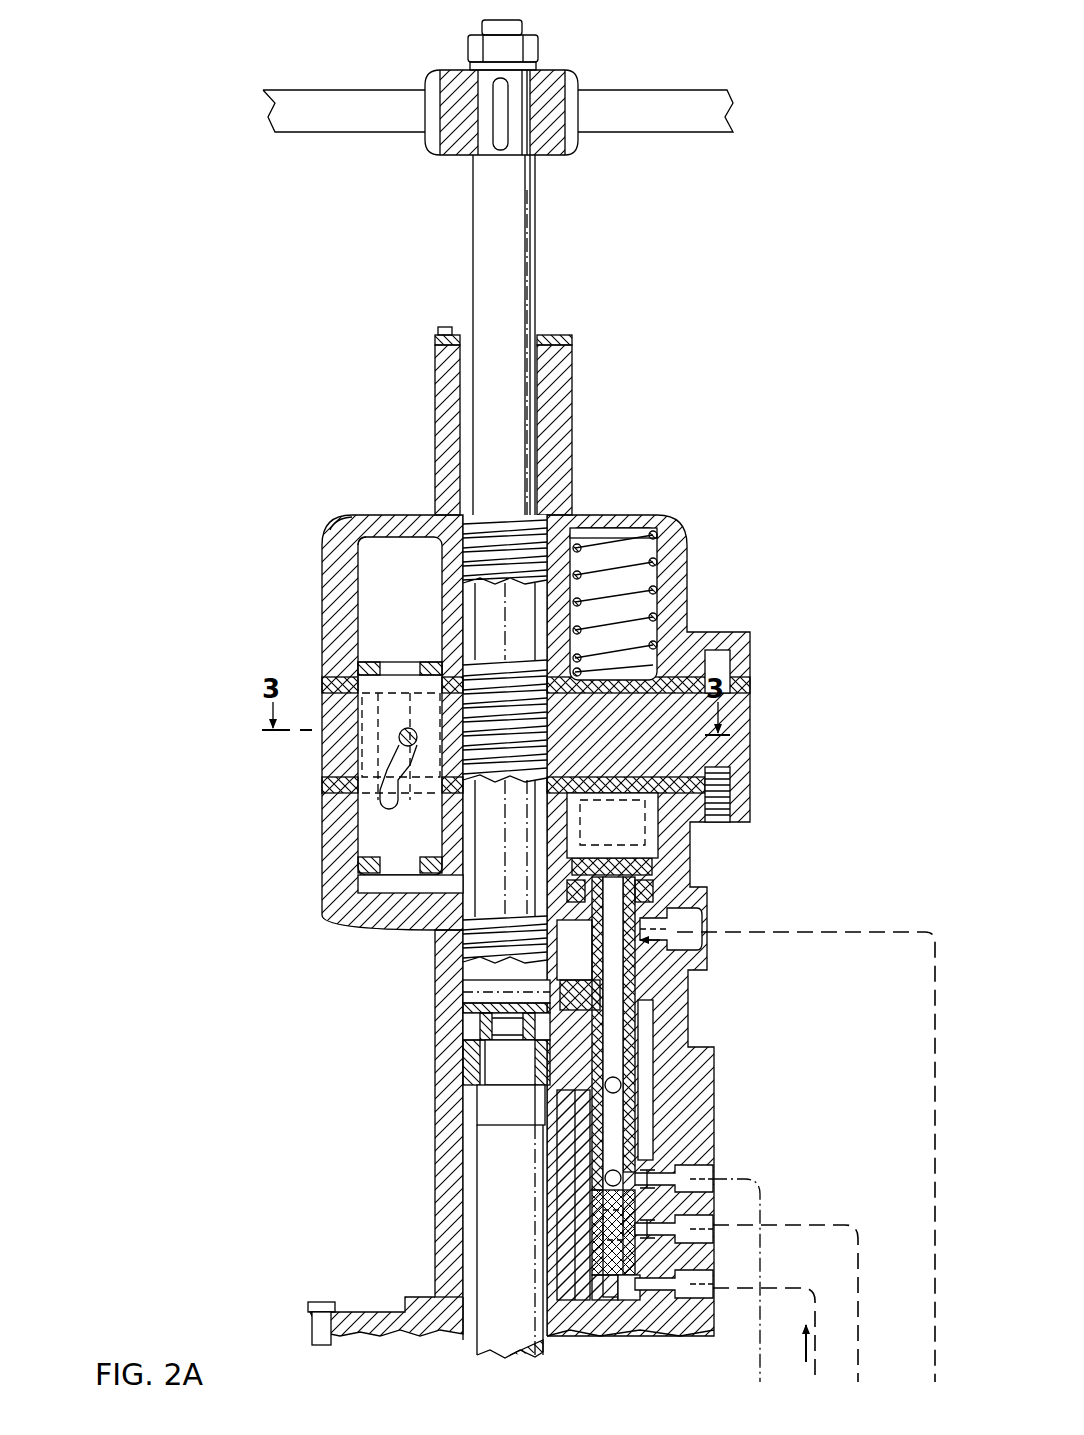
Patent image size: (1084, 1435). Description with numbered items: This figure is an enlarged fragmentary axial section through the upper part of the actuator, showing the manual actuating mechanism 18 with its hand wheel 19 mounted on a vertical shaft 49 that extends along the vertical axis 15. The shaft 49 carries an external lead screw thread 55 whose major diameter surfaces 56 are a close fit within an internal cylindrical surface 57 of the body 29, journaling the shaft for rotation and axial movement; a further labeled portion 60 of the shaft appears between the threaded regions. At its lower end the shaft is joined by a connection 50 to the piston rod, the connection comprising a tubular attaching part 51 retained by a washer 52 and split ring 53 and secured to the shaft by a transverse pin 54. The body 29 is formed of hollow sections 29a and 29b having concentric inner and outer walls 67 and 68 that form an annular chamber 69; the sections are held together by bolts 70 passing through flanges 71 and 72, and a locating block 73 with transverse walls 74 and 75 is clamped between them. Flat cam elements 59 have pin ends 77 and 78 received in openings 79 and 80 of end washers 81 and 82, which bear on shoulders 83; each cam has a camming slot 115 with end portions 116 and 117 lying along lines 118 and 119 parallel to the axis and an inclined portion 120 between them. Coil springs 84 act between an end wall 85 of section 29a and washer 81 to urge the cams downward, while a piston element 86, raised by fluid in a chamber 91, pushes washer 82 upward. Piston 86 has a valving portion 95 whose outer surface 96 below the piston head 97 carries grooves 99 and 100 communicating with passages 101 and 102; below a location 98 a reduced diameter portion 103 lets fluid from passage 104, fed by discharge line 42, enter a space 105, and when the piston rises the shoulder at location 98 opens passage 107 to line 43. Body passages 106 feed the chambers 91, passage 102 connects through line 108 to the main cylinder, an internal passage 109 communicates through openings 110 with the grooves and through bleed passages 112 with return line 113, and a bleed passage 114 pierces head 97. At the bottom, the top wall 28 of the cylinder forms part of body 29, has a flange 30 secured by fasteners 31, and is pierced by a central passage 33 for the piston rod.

The vertical axis 15 is at (505, 850).
The manual actuating mechanism 18 is at (762, 548).
The hand wheel 19 is at (695, 122).
The top wall 28 is at (620, 1334).
The body 29 is at (548, 395).
The hollow body section 29a is at (322, 585).
The hollow body section 29b is at (322, 838).
The flange 30 is at (362, 1312).
The fasteners 31 is at (322, 1302).
The central passage 33 is at (478, 1335).
The discharge line 42 is at (790, 1288).
The line 43 is at (832, 1225).
The vertical shaft 49 is at (523, 448).
The connection 50 is at (450, 1054).
The tubular attaching part 51 is at (472, 1076).
The washer 52 is at (478, 1028).
The split ring 53 is at (475, 1010).
The transverse pin 54 is at (468, 992).
The external lead screw thread 55 is at (553, 520).
The major diameter surfaces 56 is at (552, 706).
The internal cylindrical surface 57 is at (542, 363).
The cam elements 59 is at (360, 862).
The stem intermediate portion 60 is at (487, 685).
The inner wall 67 is at (443, 552).
The outer wall 68 is at (356, 552).
The annular chamber 69 is at (340, 548).
The bolts 70 is at (750, 636).
The flange 71 is at (745, 655).
The flange 72 is at (736, 792).
The locating block 73 is at (745, 722).
The transverse wall 74 is at (590, 652).
The transverse wall 75 is at (607, 798).
The pin end 77 is at (405, 675).
The pin end 78 is at (408, 900).
The opening 79 is at (395, 662).
The opening 80 is at (368, 895).
The end washer 81 is at (353, 685).
The end washer 82 is at (370, 885).
The shoulders 83 is at (432, 660).
The coil springs 84 is at (632, 542).
The end wall 85 is at (643, 520).
The piston element 86 is at (702, 940).
The chamber 91 is at (690, 1030).
The valving portion 95 is at (690, 1046).
The outer surface 96 is at (700, 1112).
The piston head 97 is at (688, 1002).
The location 98 is at (600, 1278).
The annular fluid conducting groove 99 is at (580, 1112).
The annular fluid conducting groove 100 is at (594, 1178).
The passage 101 is at (572, 1212).
The passage 102 is at (690, 1176).
The reduced diameter portion 103 is at (610, 1252).
The passage 104 is at (680, 1318).
The space 105 is at (585, 1290).
The body passages 106 is at (612, 1092).
The passage 107 is at (660, 1238).
The line 108 is at (790, 1180).
The internal passage 109 is at (692, 893).
The openings 110 is at (620, 1084).
The bleed passages 112 is at (690, 986).
The line 113 is at (780, 930).
The bleed passage 114 is at (572, 1000).
The camming slot 115 is at (385, 762).
The slot end portion 116 is at (404, 737).
The slot end portion 117 is at (378, 782).
The line 118 is at (404, 728).
The line 119 is at (392, 826).
The inclined slot portion 120 is at (378, 792).